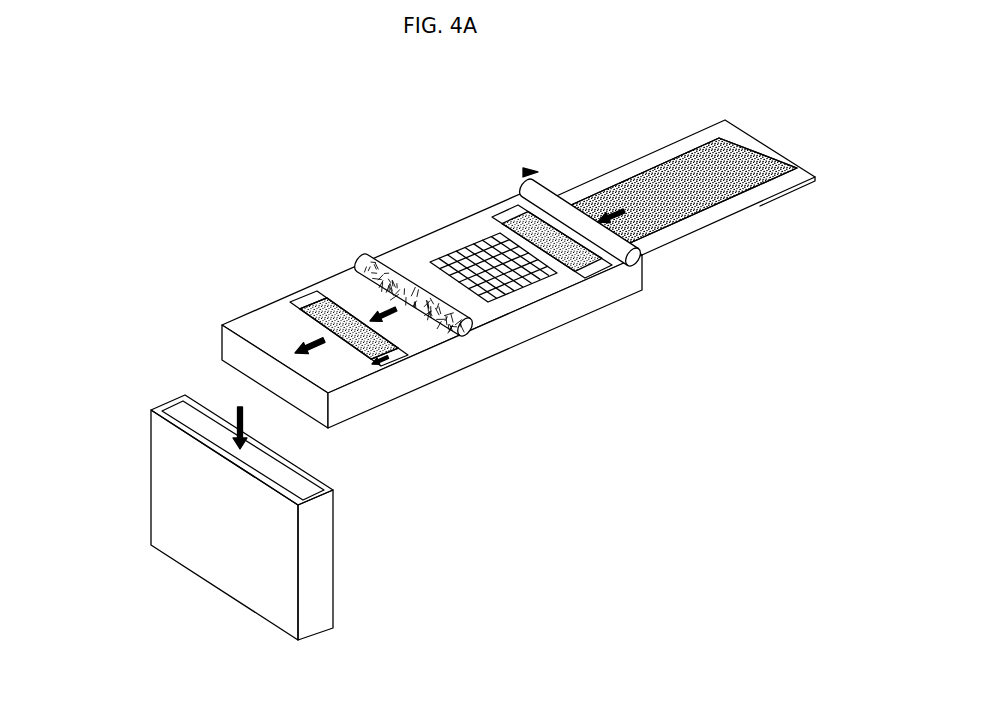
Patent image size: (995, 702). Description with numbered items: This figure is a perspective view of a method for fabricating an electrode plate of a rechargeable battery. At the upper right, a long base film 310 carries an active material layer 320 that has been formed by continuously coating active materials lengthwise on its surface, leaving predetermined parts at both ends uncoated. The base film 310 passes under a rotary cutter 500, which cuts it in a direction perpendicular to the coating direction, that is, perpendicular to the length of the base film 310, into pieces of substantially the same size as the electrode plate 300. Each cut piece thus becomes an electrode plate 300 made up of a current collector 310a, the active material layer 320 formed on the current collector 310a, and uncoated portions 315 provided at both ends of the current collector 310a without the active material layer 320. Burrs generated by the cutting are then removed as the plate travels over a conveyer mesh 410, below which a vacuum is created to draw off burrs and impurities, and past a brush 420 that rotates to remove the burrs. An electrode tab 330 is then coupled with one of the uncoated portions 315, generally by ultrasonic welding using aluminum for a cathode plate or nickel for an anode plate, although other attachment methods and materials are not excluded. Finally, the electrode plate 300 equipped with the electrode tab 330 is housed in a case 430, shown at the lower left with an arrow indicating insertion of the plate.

The electrode plate 300 is at (420, 383).
The base film 310 is at (603, 170).
The current collector 310a is at (243, 294).
The uncoated portion 315 is at (300, 297).
The active material layer 320 is at (335, 308).
The electrode tab 330 is at (384, 366).
The conveyer mesh 410 is at (468, 244).
The brush 420 is at (358, 256).
The case 430 is at (160, 445).
The rotary cutter 500 is at (528, 190).